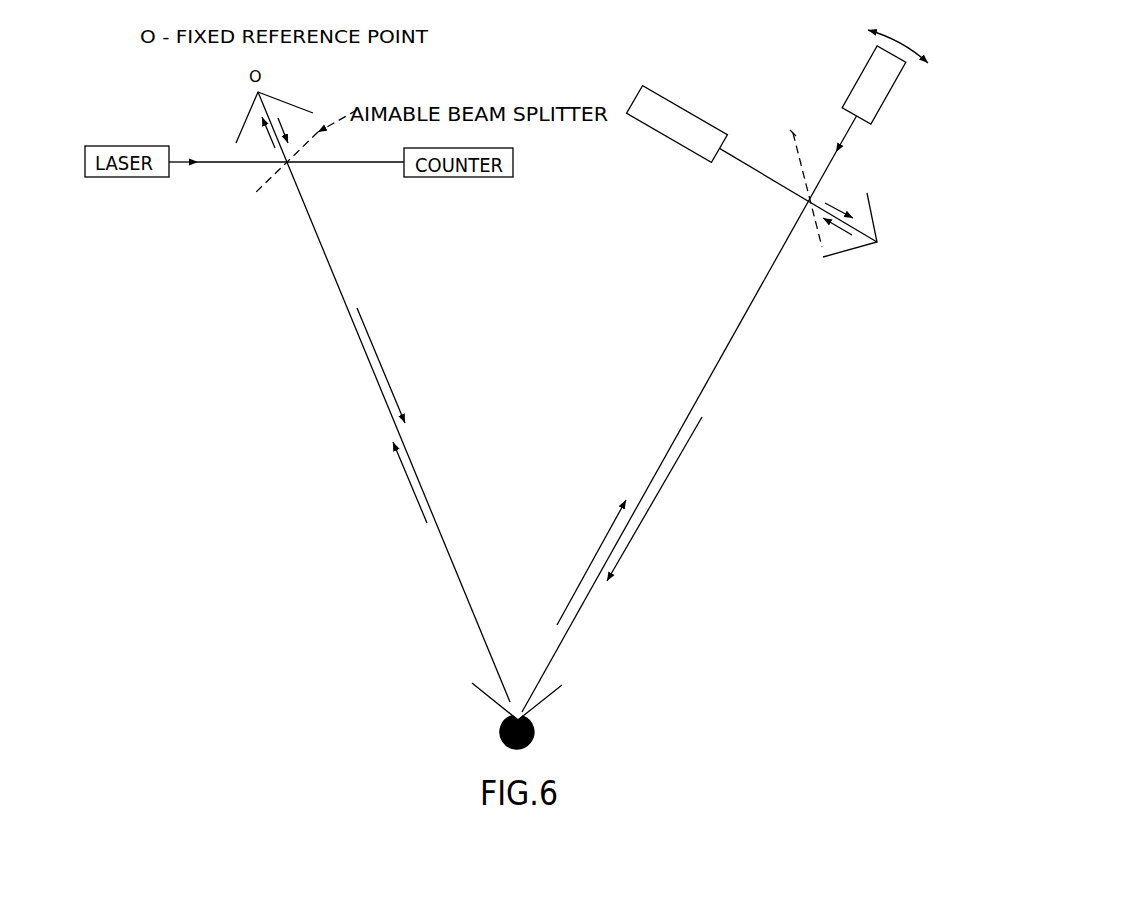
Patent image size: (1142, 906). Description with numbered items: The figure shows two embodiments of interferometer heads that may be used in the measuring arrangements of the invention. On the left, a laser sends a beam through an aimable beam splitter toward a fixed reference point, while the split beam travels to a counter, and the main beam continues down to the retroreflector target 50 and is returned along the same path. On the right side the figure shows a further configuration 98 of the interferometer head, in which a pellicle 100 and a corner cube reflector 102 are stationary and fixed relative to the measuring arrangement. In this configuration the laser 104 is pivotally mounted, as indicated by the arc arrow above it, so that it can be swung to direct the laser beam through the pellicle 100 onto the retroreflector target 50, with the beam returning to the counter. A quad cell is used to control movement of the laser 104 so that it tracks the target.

The retroreflector target 50 is at (530, 740).
The configuration 98 is at (965, 100).
The pellicle 100 is at (795, 135).
The corner cube reflector 102 is at (868, 198).
The laser 104 is at (887, 98).